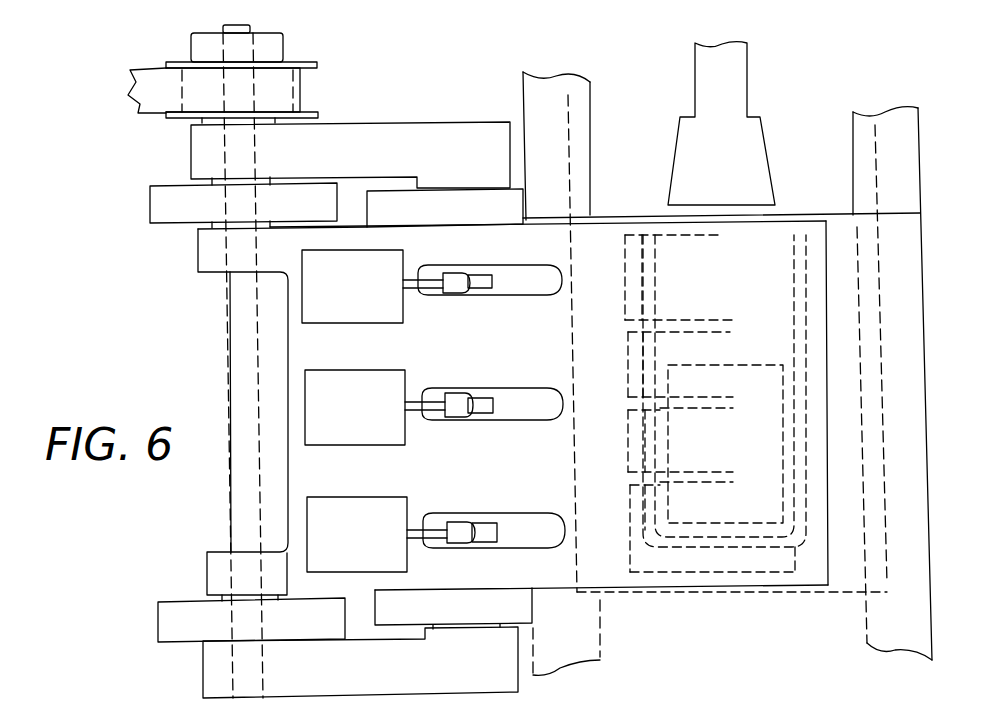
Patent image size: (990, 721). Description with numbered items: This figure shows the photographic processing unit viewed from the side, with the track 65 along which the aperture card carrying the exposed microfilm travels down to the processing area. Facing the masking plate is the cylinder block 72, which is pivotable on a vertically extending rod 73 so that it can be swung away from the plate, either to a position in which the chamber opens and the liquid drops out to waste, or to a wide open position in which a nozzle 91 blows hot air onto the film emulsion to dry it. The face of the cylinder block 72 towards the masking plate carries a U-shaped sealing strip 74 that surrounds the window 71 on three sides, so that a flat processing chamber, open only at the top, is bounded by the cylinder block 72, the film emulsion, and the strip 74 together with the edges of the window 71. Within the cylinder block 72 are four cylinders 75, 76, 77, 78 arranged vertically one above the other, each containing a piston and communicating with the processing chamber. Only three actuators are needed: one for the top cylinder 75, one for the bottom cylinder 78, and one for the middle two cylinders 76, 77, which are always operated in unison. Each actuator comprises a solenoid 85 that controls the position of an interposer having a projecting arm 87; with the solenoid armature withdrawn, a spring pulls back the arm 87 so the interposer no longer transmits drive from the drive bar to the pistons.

The track 65 is at (920, 167).
The window 71 is at (718, 523).
The cylinder block 72 is at (617, 578).
The rod 73 is at (230, 348).
The U-shaped sealing strip 74 is at (795, 572).
The cylinder 75 is at (625, 267).
The cylinder 76 is at (628, 365).
The cylinder 77 is at (628, 447).
The cylinder 78 is at (630, 527).
The solenoid 85 is at (392, 305).
The projecting arm 87 is at (483, 289).
The nozzle 91 is at (760, 167).